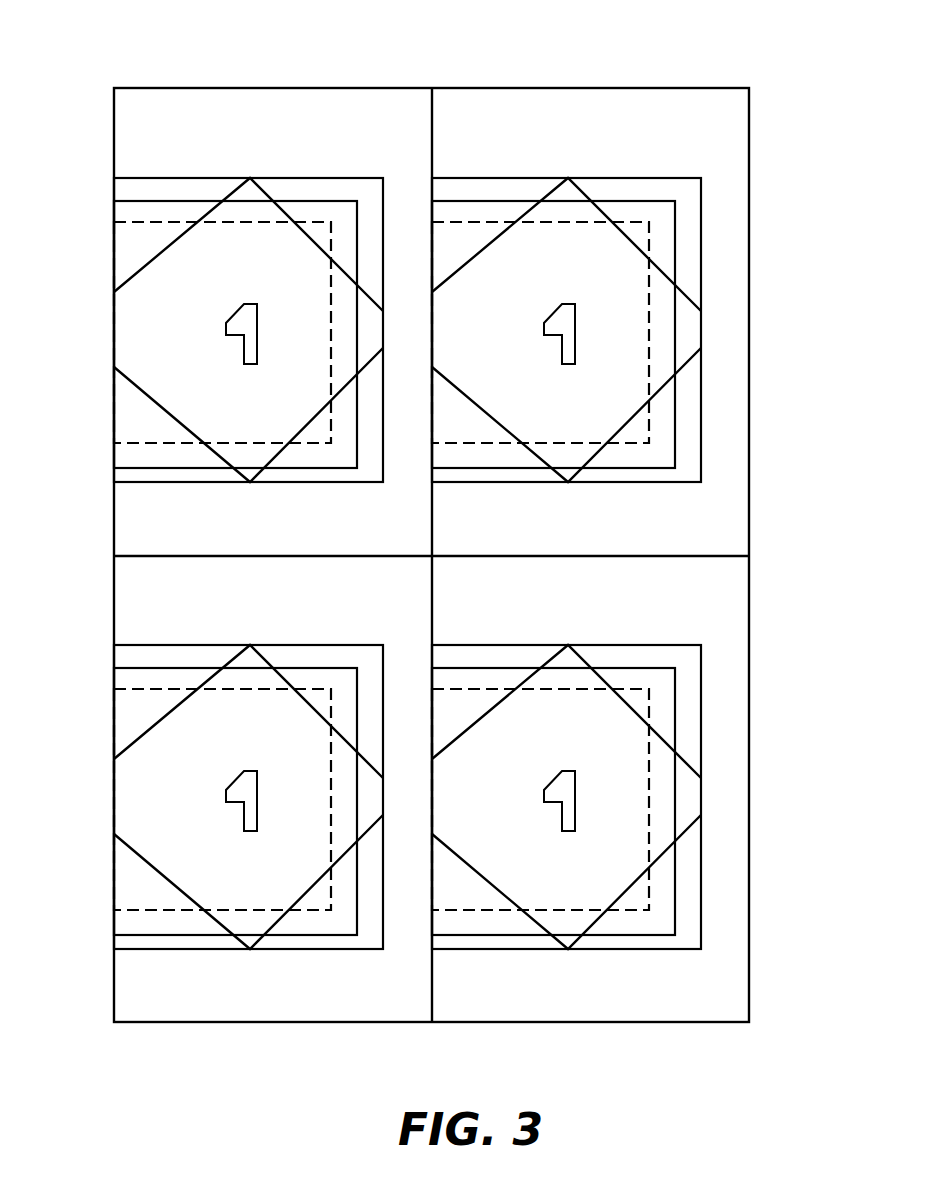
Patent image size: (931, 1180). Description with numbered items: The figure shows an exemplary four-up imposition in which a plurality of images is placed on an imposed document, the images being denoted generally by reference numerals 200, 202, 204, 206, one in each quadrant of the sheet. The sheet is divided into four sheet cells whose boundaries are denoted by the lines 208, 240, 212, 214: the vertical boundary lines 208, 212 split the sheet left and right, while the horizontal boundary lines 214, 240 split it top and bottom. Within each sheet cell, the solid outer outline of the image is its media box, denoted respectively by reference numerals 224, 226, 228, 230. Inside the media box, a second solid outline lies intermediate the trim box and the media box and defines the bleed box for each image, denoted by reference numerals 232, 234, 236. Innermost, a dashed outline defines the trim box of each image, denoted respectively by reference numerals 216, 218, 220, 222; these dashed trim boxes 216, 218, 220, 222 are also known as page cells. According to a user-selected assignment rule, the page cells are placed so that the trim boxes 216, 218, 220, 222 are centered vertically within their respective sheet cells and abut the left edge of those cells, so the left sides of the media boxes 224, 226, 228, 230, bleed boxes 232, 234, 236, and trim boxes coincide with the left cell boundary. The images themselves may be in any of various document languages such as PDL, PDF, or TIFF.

The diamond-shaped element of first cell 200 is at (315, 242).
The diamond-shaped element of second cell 202 is at (632, 240).
The diamond-shaped element of third cell 204 is at (137, 742).
The diamond-shaped element of fourth cell 206 is at (630, 706).
The sheet cell boundary line 208 is at (432, 125).
The sheet cell boundary line 212 is at (432, 1003).
The sheet cell boundary line 214 is at (138, 556).
The sheet cell boundary line 240 is at (720, 556).
The trim box 216 is at (128, 220).
The trim box 218 is at (652, 329).
The trim box 220 is at (652, 790).
The trim box 222 is at (137, 909).
The media box 224 is at (157, 177).
The media box 226 is at (702, 200).
The media box 228 is at (702, 940).
The media box 230 is at (137, 950).
The bleed box 232 is at (137, 200).
The bleed box 234 is at (676, 262).
The bleed box 236 is at (677, 887).